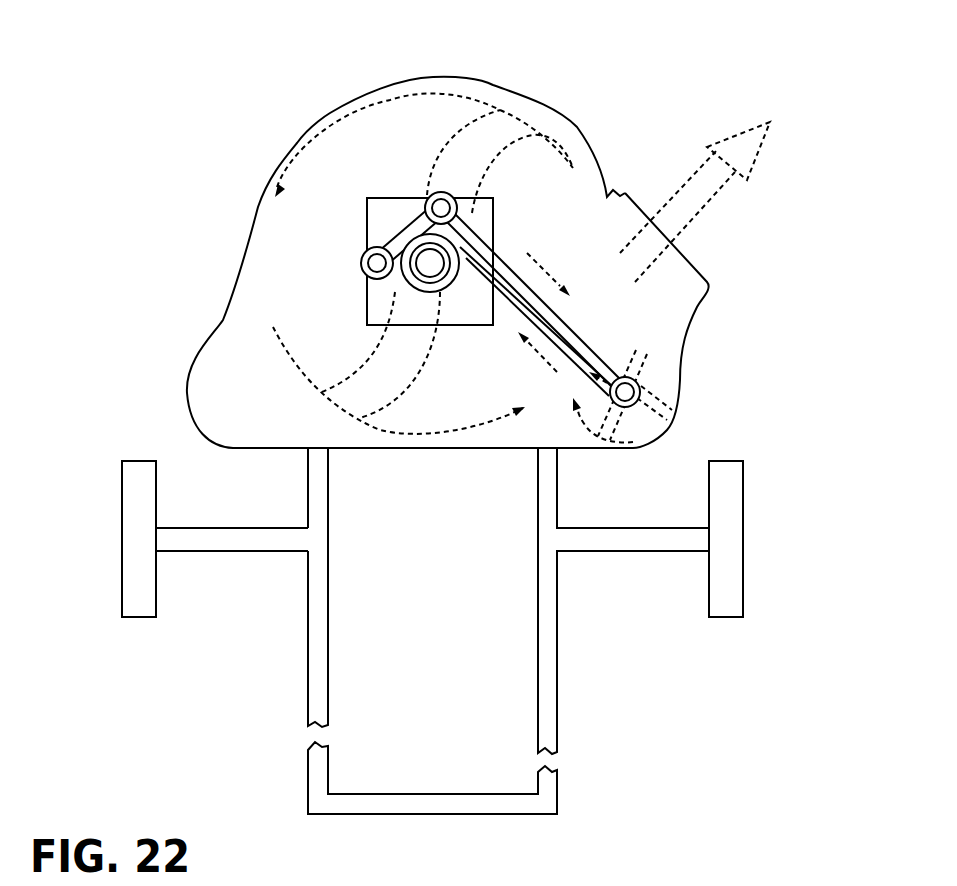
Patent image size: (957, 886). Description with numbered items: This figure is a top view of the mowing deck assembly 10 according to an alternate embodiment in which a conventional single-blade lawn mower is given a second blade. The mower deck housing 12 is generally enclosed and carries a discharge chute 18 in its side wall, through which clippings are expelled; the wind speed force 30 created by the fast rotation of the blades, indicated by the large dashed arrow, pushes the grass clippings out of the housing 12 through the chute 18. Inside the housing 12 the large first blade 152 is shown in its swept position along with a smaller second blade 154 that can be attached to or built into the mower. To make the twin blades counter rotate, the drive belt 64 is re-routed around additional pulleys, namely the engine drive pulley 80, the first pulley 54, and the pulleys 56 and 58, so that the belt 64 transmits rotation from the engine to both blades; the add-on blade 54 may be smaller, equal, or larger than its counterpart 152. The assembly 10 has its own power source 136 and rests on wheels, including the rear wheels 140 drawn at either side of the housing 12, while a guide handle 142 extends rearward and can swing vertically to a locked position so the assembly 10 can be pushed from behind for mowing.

The mowing deck assembly 10 is at (352, 81).
The mower deck housing 12 is at (398, 262).
The discharge chute 18 is at (682, 292).
The wind speed force 30 is at (727, 172).
The first pulley 54 is at (640, 387).
The pulley 56 is at (448, 195).
The pulley 58 is at (365, 263).
The drive belt 64 is at (507, 255).
The engine drive pulley 80 is at (413, 290).
The power source 136 is at (380, 223).
The rear wheel 140 is at (723, 560).
The guide handle 142 is at (547, 693).
The single blade 152 is at (472, 142).
The second blade 154 is at (658, 413).